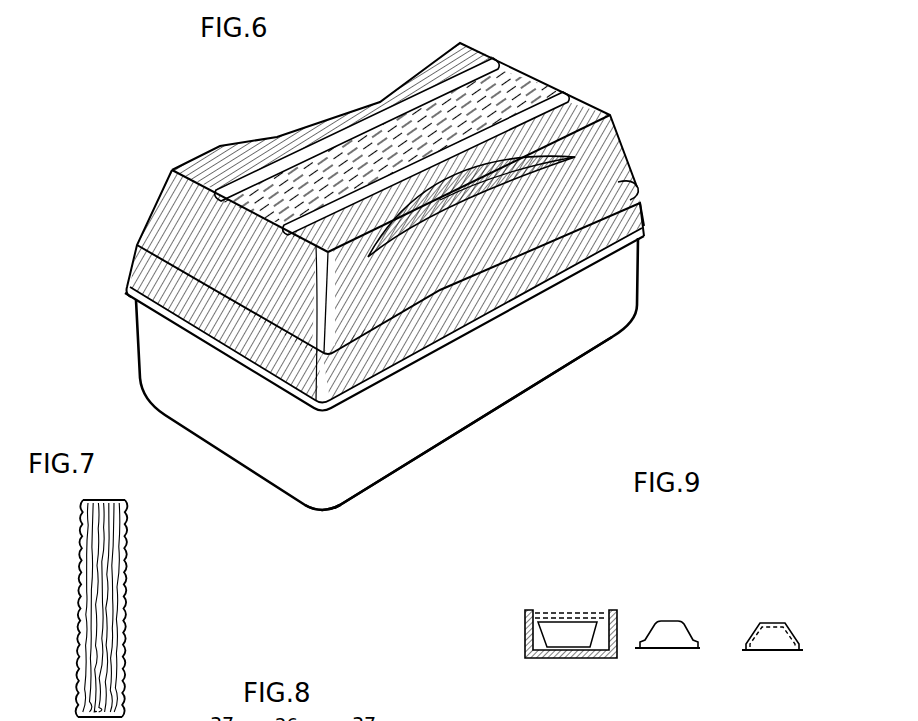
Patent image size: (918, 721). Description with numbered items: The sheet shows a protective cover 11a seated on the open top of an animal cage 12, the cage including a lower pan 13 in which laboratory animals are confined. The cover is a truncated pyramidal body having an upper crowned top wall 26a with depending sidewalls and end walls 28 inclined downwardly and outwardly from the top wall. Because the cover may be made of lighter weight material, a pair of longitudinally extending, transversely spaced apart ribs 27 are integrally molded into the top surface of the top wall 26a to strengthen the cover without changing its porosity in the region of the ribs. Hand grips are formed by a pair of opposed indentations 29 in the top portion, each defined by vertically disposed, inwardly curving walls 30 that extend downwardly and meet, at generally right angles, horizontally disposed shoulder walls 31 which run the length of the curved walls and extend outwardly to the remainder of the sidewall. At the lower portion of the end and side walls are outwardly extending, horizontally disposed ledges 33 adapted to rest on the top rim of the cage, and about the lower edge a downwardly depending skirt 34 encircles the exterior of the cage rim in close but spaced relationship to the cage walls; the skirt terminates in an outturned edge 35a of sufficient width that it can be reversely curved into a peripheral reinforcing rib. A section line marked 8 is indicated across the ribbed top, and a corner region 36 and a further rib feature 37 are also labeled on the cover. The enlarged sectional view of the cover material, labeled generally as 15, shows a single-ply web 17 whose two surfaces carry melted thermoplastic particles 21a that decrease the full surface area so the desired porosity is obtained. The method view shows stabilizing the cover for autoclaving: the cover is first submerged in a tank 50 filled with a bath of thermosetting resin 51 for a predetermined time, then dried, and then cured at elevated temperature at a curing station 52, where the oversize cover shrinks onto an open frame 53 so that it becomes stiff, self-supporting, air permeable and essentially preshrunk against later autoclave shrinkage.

In FIG. 6, the section line 8- 8 is at (298, 115).
In FIG. 6, the cover 11a is at (408, 214).
In FIG. 9, the cover 11a is at (546, 626).
In FIG. 6, the cage 12 is at (598, 342).
In FIG. 6, the pan 13 is at (480, 397).
In FIG. 7, the post 15 is at (104, 588).
In FIG. 7, the web 17 is at (103, 498).
In FIG. 7, the melted thermoplastic particles 21a is at (82, 567).
In FIG. 6, the top wall 26a is at (523, 83).
In FIG. 6, the ribs 27 is at (615, 175).
In FIG. 6, the end walls 28 is at (162, 223).
In FIG. 6, the indentations 29 is at (393, 78).
In FIG. 6, the inwardly curving walls 30 is at (408, 214).
In FIG. 6, the shoulder walls 31 is at (507, 177).
In FIG. 6, the ledges 33 is at (641, 238).
In FIG. 6, the skirt 34 is at (550, 258).
In FIG. 6, the outturned edge 35a is at (466, 337).
In FIG. 6, the corner of skirt 36 is at (320, 317).
In FIG. 6, the stiffening ribs 37 is at (380, 170).
In FIG. 9, the tank 50 is at (587, 660).
In FIG. 9, the thermosetting resin 51 is at (607, 610).
In FIG. 9, the curing station 52 is at (777, 613).
In FIG. 9, the open frame 53 is at (793, 628).